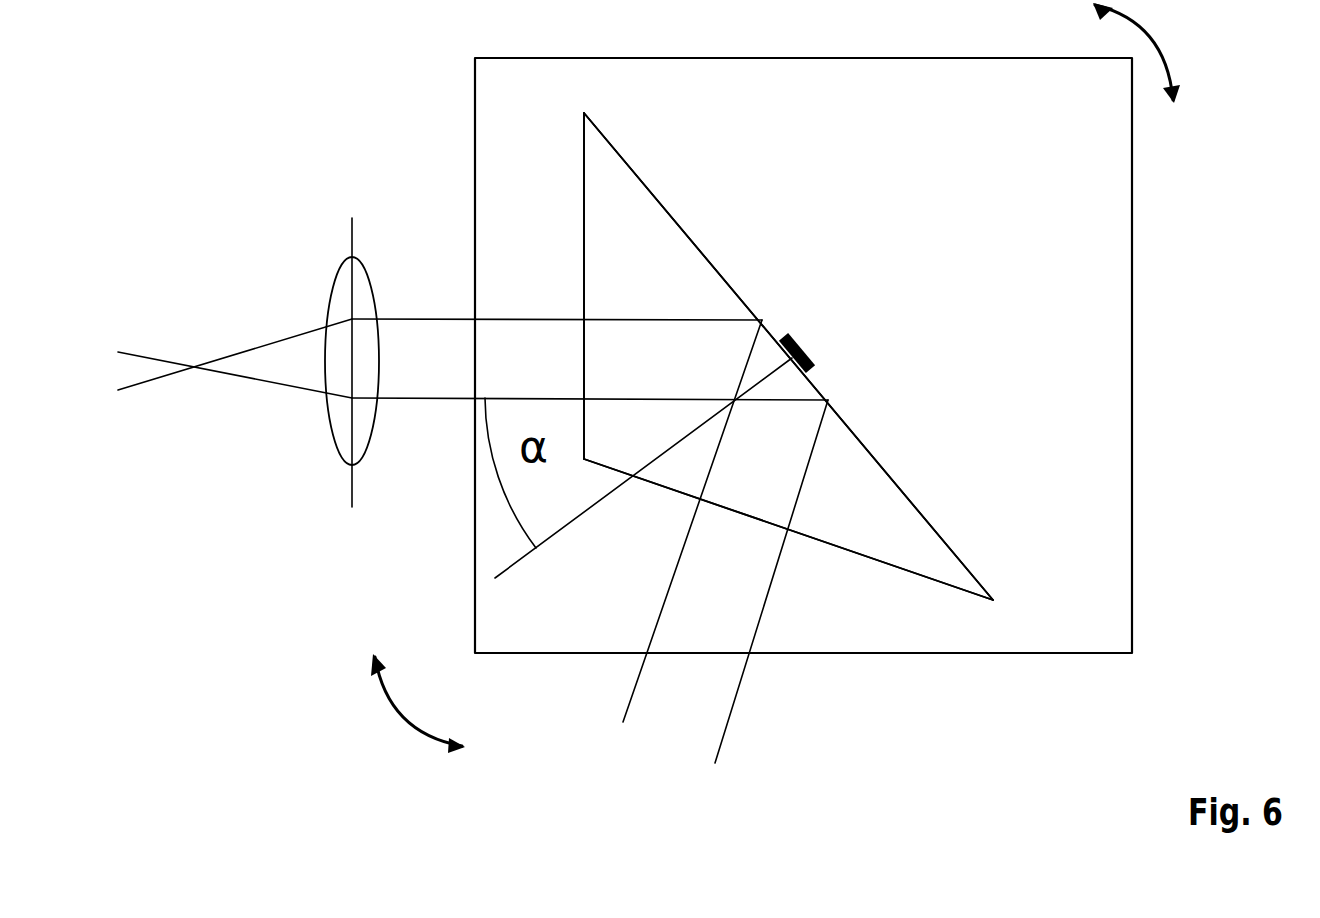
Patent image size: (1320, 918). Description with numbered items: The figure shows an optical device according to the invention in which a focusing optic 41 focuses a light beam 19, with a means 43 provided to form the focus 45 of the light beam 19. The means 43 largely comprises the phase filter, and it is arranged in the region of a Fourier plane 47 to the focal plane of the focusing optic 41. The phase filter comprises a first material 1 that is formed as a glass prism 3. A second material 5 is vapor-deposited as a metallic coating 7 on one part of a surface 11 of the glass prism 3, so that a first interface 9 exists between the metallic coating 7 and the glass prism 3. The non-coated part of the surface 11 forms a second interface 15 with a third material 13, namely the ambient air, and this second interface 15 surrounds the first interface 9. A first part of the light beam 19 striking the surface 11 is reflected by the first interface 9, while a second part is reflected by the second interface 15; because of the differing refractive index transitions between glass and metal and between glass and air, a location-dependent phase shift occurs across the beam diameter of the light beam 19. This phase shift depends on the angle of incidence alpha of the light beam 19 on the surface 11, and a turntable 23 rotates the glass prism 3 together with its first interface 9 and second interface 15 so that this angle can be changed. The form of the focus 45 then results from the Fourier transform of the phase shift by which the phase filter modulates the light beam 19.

The first material 1 is at (544, 262).
The glass prism 3 is at (653, 250).
The second material 5 is at (830, 355).
The metallic coating 7 is at (803, 345).
The first interface 9 is at (808, 371).
The surface 11 is at (652, 138).
The third material 13 is at (1044, 184).
The second interface 15 is at (718, 270).
The light beam 19 is at (418, 342).
The turntable 23 is at (1105, 253).
The focusing optic 41 is at (338, 300).
The means to form the focus 43 is at (912, 553).
The focus 45 is at (191, 347).
The Fourier plane 47 is at (776, 327).